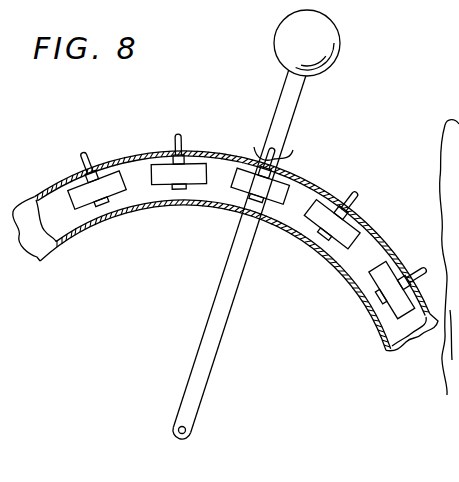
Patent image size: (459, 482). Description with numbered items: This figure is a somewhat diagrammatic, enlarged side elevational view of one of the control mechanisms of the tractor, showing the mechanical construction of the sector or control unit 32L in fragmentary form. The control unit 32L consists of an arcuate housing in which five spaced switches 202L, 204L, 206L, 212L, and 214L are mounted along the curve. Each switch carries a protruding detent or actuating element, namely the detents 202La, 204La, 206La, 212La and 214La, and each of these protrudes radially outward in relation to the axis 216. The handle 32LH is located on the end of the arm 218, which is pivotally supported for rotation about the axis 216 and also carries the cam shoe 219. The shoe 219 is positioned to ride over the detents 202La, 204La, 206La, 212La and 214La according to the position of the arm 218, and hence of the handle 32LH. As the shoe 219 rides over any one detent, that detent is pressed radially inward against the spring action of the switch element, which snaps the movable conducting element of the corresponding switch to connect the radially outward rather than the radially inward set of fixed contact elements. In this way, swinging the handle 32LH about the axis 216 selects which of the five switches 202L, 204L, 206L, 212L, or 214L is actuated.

The sector or control unit 32L is at (305, 181).
The handle 32LH is at (324, 47).
The switch 202L is at (259, 188).
The detent or actuating element 202La is at (284, 157).
The switch 204L is at (179, 177).
The detent or actuating element 204La is at (180, 138).
The switch 206L is at (98, 192).
The detent or actuating element 206La is at (93, 144).
The switch 212L is at (330, 226).
The detent or actuating element 212La is at (359, 199).
The switch 214L is at (390, 291).
The detent or actuating element 214La is at (414, 264).
The axis 216 is at (191, 428).
The arm 218 is at (220, 333).
The cam shoe 219 is at (265, 153).